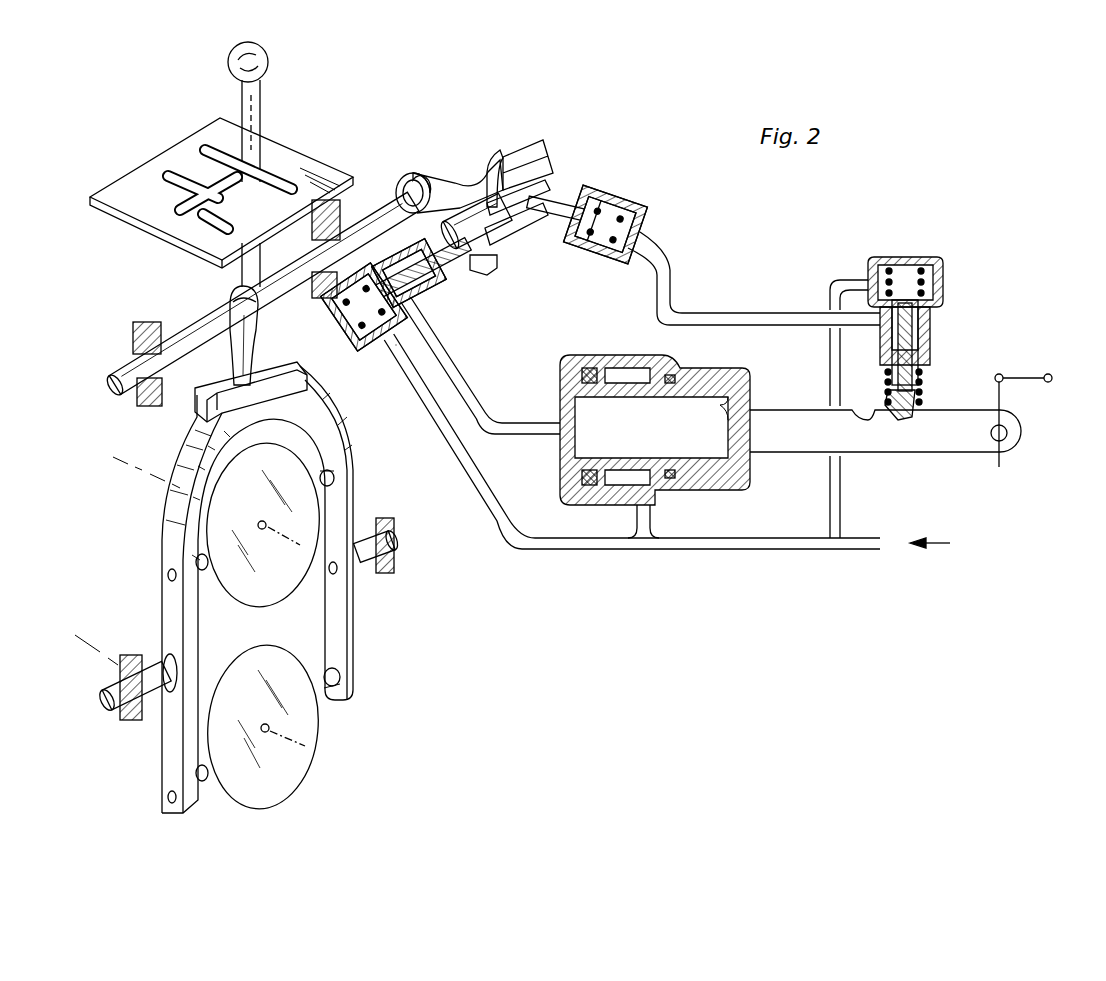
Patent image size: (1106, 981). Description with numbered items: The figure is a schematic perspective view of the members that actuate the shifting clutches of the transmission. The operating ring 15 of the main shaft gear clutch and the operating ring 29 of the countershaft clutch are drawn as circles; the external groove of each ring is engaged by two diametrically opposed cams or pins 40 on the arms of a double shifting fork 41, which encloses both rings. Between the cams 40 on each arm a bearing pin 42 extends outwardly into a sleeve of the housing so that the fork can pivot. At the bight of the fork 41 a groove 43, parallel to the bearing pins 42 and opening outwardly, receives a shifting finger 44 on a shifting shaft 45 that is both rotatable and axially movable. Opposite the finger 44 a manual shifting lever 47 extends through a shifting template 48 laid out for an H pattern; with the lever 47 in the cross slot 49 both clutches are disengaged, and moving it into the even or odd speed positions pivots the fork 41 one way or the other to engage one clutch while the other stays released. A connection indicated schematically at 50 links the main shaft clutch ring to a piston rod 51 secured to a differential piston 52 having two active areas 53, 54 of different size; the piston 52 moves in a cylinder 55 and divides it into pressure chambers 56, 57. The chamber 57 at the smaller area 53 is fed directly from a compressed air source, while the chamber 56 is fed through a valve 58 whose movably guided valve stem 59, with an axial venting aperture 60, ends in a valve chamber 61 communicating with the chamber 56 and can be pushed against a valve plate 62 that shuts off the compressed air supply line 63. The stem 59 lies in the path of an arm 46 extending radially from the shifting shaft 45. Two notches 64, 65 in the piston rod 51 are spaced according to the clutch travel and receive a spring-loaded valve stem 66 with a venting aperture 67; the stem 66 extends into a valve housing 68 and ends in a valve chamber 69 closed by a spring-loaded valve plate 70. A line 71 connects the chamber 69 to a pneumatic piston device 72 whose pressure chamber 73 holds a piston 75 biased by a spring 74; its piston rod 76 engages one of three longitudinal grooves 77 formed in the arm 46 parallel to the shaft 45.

The manual shifting lever 47 is at (268, 62).
The shifting template 48 is at (313, 170).
The cross slot 49 is at (183, 225).
The arm 46 is at (432, 158).
The valve stem 59 is at (470, 228).
The longitudinal grooves 77 is at (540, 178).
The piston 75 is at (598, 202).
The spring 74 is at (632, 212).
The pneumatic piston device 72 is at (638, 205).
The pressure chamber 73 is at (630, 232).
The piston rod 76 is at (560, 242).
The valve plate 62 is at (372, 282).
The valve chamber 61 is at (392, 262).
The venting aperture 60 is at (430, 262).
The valve 58 is at (440, 302).
The shifting finger 44 is at (258, 347).
The shifting shaft 45 is at (108, 385).
The groove 43 is at (200, 404).
The operating ring 15 is at (290, 468).
The cams or pins 40 is at (336, 480).
The double shifting fork 41 is at (165, 538).
The bearing pin 42 is at (105, 700).
The line 71 is at (768, 314).
The spring-loaded valve plate 70 is at (925, 292).
The valve chamber 69 is at (918, 312).
The venting aperture 67 is at (905, 335).
The valve housing 68 is at (930, 352).
The spring-loaded valve stem 66 is at (922, 405).
The notch 65 is at (858, 400).
The notch 64 is at (905, 420).
The piston rod 51 is at (932, 435).
The mechanical driving connection 50 is at (1030, 400).
The differential piston 52 is at (750, 468).
The active area 53 is at (612, 488).
The active area 54 is at (712, 400).
The cylinder 55 is at (715, 490).
The pressure chamber 56 is at (690, 448).
The pressure chamber 57 is at (620, 368).
The compressed air supply line 63 is at (515, 541).
The operating ring 29 is at (318, 757).